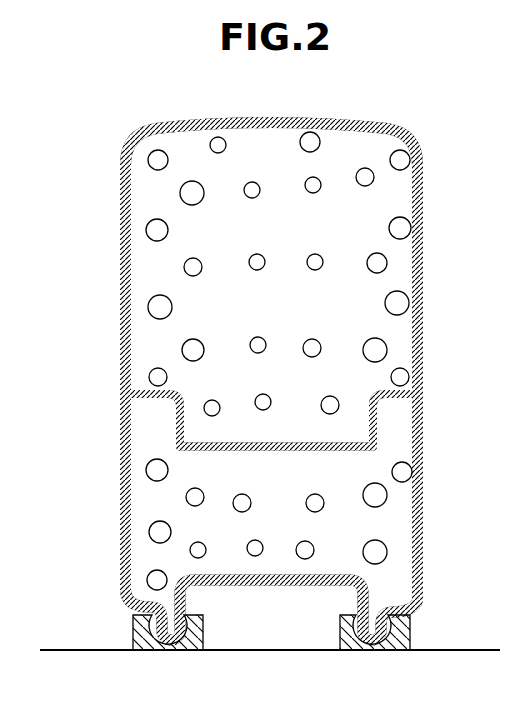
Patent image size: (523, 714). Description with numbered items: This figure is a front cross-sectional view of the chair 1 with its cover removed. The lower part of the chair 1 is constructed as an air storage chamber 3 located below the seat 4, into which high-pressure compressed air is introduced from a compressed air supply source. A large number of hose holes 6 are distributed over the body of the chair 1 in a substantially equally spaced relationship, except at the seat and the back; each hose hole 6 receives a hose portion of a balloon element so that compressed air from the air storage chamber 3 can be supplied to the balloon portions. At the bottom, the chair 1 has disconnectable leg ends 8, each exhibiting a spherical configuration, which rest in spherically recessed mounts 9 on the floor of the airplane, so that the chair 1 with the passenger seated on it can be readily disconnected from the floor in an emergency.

The chair 1 is at (433, 172).
The air storage chamber 3 is at (323, 487).
The seat 4 is at (330, 440).
The hose hole 6 is at (234, 123).
The disconnectable leg end 8 is at (140, 628).
The spherically recessed mount 9 is at (188, 649).